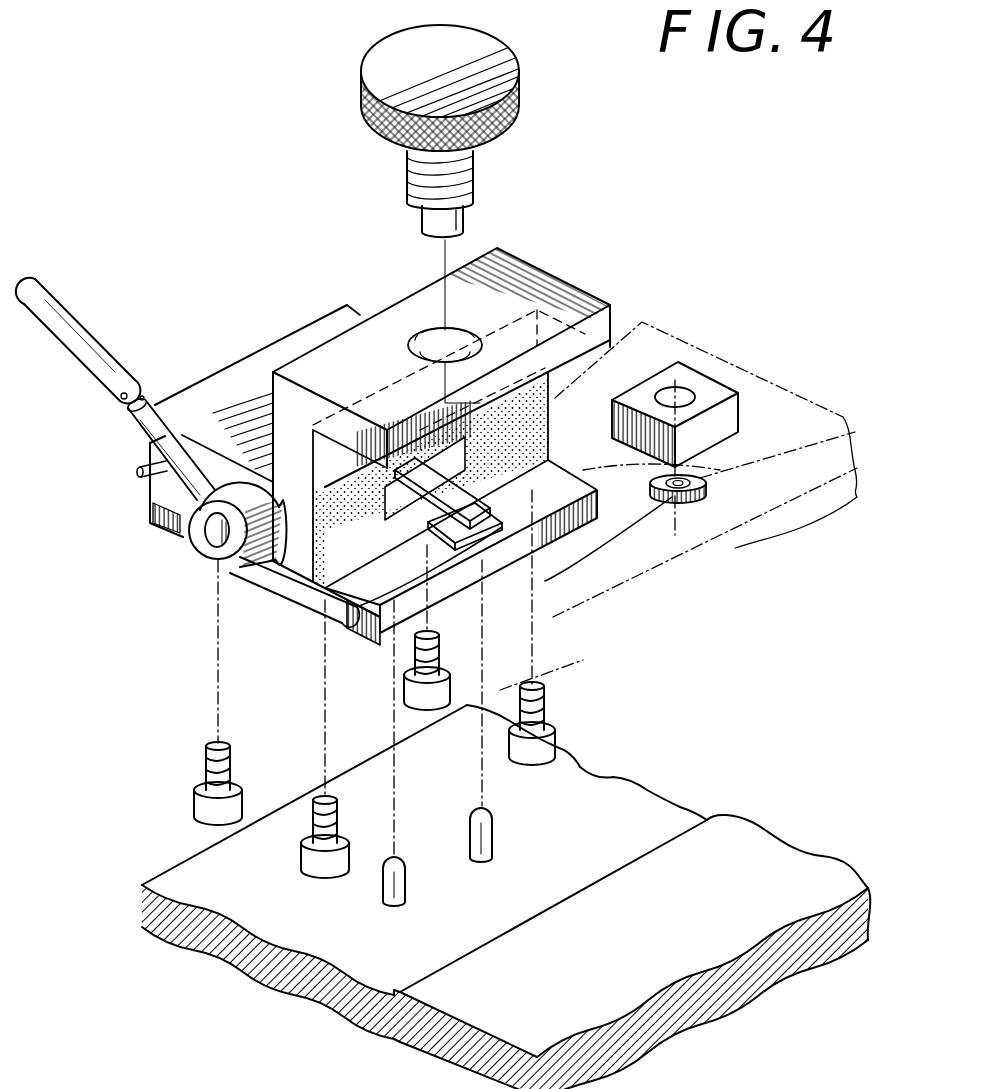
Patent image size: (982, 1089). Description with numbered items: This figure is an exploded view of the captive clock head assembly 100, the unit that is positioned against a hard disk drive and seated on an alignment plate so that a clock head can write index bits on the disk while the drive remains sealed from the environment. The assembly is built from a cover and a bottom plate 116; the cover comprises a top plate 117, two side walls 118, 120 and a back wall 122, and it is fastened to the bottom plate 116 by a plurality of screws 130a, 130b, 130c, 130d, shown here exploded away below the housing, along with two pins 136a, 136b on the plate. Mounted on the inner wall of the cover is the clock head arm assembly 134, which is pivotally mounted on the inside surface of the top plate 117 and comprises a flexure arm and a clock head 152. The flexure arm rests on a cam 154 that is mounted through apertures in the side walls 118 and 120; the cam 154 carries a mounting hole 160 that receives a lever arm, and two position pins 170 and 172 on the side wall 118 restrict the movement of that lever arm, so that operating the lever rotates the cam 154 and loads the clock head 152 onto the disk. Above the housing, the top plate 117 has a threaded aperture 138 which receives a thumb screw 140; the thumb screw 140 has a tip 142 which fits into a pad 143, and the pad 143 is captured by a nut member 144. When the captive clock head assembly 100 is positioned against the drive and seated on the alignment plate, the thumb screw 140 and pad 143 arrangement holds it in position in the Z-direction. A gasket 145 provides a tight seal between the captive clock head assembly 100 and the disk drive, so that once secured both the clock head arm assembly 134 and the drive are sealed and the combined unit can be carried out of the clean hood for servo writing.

The captive clock head assembly 100 is at (678, 422).
The bottom plate 116 is at (310, 577).
The top plate 117 is at (251, 375).
The side wall 118 is at (139, 495).
The side wall 120 is at (441, 428).
The back wall 122 is at (126, 448).
The screw 130a is at (597, 627).
The screw 130b is at (341, 627).
The screw 130c is at (163, 692).
The screw 130d is at (282, 745).
The clock head arm assembly 134 is at (593, 542).
The locating pin 136a is at (357, 771).
The locating pin 136b is at (540, 712).
The threaded aperture 138 is at (497, 291).
The thumb screw 140 is at (400, 80).
The tip 142 is at (372, 277).
The pad 143 is at (718, 426).
The nut member 144 is at (748, 531).
The gasket 145 is at (421, 560).
The clock head 152 is at (557, 546).
The cam 154 is at (191, 572).
The mounting hole 160 is at (146, 543).
The position pin 170 is at (131, 341).
The position pin 172 is at (86, 488).